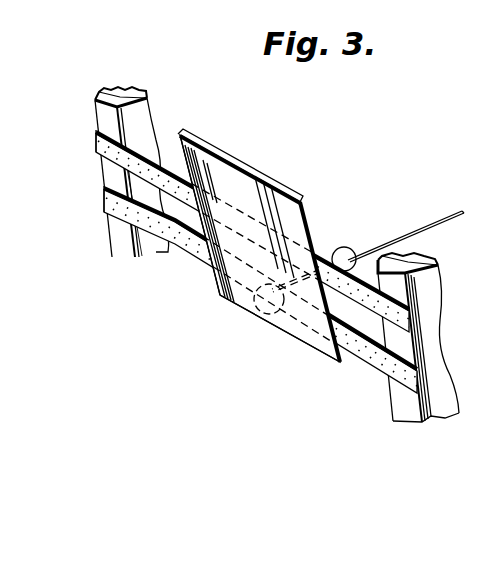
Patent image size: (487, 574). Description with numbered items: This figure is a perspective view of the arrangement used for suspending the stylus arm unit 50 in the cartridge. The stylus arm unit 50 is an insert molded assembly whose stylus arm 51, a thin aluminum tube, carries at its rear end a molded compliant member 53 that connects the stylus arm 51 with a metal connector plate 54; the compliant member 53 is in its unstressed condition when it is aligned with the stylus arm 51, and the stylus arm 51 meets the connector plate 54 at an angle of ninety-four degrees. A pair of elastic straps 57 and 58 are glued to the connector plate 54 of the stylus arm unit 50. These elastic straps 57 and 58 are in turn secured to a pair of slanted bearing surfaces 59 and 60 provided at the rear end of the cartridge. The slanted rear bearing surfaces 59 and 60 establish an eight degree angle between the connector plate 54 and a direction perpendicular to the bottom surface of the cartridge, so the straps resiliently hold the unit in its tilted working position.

The stylus arm unit 50 is at (355, 176).
The stylus arm 51 is at (428, 224).
The compliant member 53 is at (333, 222).
The connector plate 54 is at (235, 177).
The elastic strap 57 is at (94, 142).
The elastic strap 58 is at (105, 201).
The slanted bearing surface 59 is at (140, 121).
The slanted bearing surface 60 is at (409, 408).